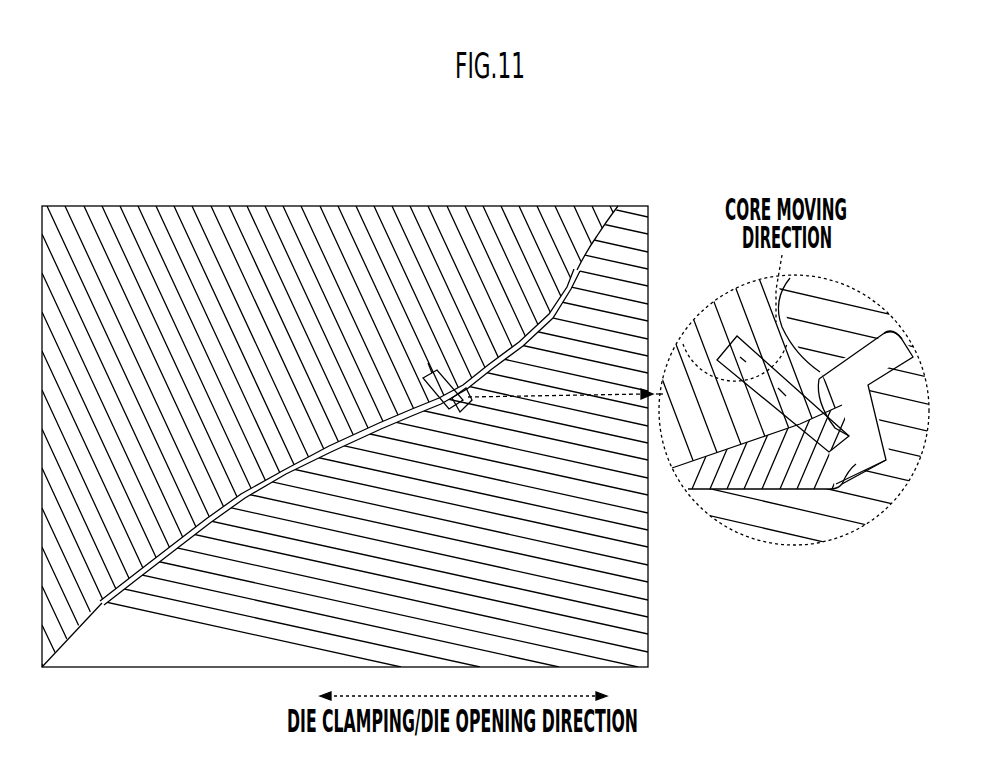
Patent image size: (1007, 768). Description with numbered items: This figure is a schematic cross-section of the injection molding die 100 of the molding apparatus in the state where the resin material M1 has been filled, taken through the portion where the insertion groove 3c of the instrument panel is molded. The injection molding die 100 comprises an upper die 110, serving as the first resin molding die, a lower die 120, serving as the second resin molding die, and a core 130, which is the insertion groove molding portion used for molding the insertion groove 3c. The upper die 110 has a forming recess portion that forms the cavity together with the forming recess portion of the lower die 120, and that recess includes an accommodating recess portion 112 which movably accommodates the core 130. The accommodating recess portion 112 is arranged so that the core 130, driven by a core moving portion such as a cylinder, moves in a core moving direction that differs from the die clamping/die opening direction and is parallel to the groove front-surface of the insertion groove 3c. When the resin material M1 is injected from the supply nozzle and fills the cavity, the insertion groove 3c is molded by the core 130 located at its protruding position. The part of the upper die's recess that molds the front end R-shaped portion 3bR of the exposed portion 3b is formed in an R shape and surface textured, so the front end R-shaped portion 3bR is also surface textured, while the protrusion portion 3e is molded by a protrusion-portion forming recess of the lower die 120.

The injection molding die 100 is at (447, 178).
The upper die 110 is at (322, 205).
The accommodating recess portion 112 is at (664, 400).
The lower die 120 is at (623, 207).
The core 130 is at (817, 315).
The exposed portion 3b is at (895, 440).
The front end R-shaped portion 3bR is at (826, 360).
The insertion groove 3c is at (786, 490).
The protrusion portion 3e is at (853, 463).
The resin material M1 is at (170, 552).